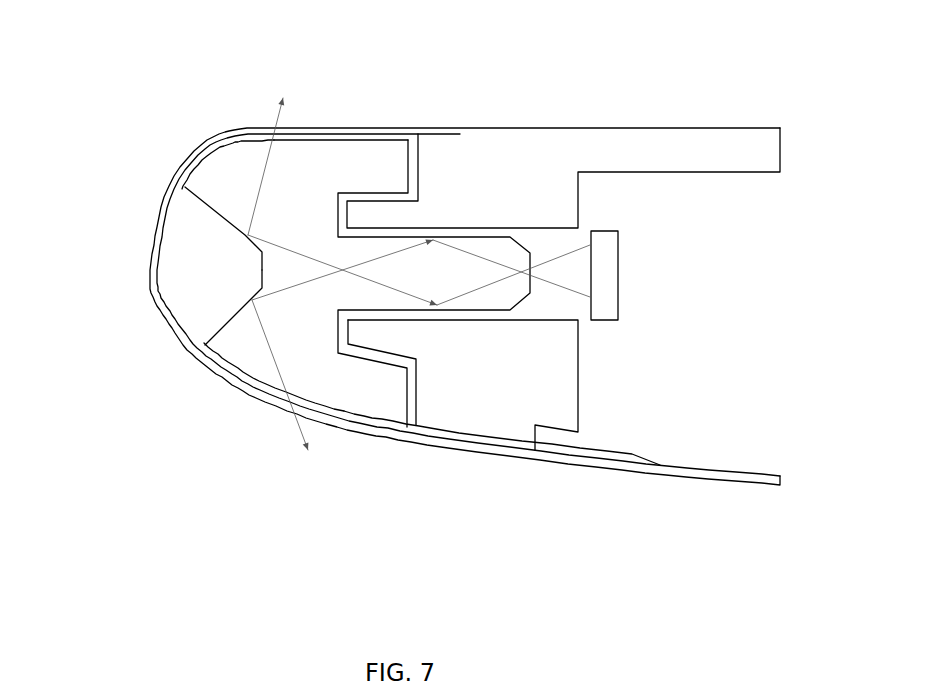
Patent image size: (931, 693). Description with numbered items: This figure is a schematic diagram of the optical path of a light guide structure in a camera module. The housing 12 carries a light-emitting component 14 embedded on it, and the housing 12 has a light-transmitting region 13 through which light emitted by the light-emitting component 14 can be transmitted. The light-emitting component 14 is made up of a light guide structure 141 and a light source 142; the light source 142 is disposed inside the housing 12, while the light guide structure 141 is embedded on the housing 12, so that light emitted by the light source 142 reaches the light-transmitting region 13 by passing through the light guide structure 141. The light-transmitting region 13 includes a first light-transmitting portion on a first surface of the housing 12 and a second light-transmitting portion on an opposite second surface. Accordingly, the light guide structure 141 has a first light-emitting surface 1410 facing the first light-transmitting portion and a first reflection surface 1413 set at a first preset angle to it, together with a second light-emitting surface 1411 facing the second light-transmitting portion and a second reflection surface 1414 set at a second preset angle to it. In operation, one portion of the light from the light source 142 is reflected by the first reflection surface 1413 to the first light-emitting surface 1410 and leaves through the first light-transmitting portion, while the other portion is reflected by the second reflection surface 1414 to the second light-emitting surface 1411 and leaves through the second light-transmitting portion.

The housing 12 is at (538, 152).
The light-transmitting region 13 is at (220, 142).
The light-emitting component 14 is at (425, 379).
The light guide structure 141 is at (350, 405).
The light source 142 is at (630, 402).
The first light-emitting surface 1410 is at (278, 390).
The second light-emitting surface 1411 is at (315, 137).
The first reflection surface 1413 is at (213, 325).
The second reflection surface 1414 is at (215, 213).